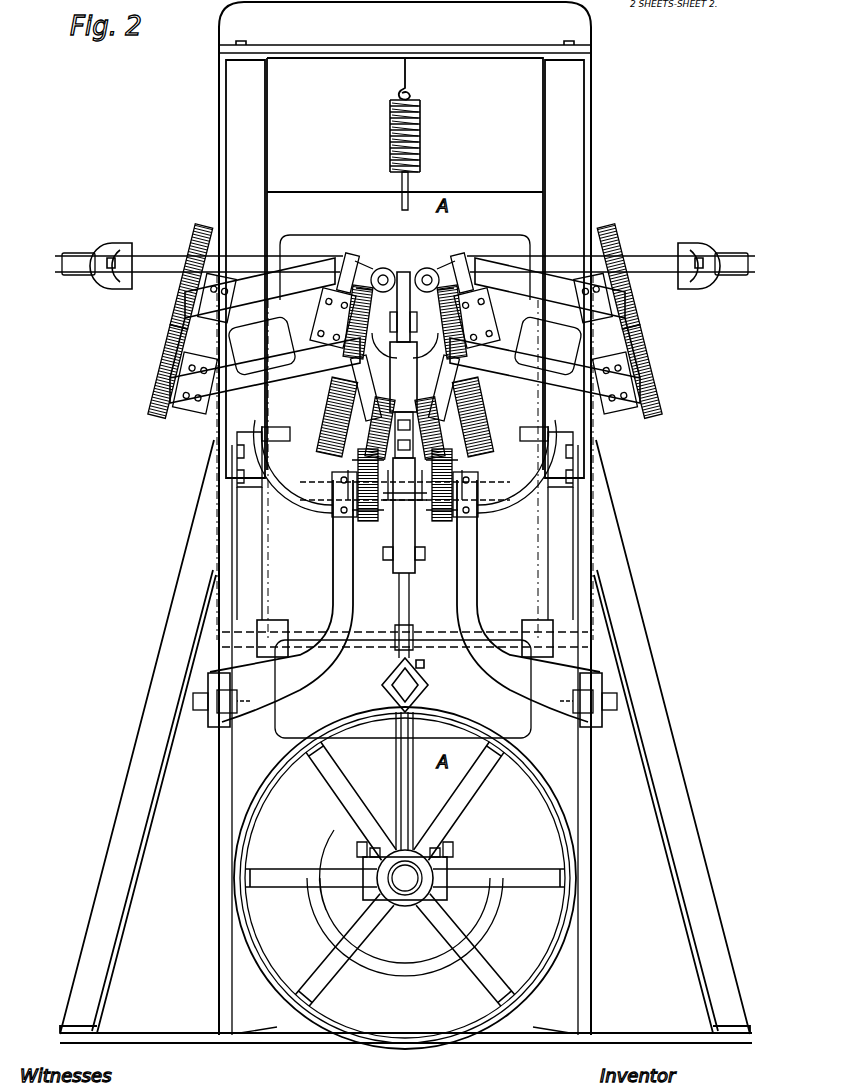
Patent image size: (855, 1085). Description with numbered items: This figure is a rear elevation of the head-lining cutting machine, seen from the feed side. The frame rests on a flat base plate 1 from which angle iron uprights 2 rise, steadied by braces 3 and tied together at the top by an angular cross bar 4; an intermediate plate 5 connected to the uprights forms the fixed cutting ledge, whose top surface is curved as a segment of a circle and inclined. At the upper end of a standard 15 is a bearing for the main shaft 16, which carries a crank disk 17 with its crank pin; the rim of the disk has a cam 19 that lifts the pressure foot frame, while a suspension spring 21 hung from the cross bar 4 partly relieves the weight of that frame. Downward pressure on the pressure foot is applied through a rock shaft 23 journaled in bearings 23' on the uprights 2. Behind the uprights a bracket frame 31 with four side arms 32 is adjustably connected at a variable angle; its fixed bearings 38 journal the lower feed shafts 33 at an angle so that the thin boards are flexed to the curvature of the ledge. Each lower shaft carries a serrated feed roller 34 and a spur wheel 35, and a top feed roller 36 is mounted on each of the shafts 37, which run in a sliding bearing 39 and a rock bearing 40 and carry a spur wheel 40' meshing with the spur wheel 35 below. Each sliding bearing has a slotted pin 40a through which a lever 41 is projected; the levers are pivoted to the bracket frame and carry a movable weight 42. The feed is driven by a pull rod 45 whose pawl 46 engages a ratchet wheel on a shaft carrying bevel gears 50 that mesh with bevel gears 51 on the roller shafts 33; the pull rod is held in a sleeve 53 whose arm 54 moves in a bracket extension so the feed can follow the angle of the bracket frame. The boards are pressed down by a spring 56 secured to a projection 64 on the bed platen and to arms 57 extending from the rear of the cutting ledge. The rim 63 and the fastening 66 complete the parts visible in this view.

The flat base plate 1 is at (226, 105).
The angle iron uprights 2 is at (582, 123).
The braces 3 is at (152, 650).
The angular cross bar 4 is at (405, 33).
The intermediate plate 5 is at (250, 487).
The standard 15 is at (322, 955).
The main shaft 16 is at (412, 872).
The crank disk 17 is at (470, 850).
The cam 19 is at (330, 833).
The suspension spring 21 is at (420, 135).
The rock shaft 23 is at (405, 653).
The bearings 23' is at (603, 598).
The bracket frame 31 is at (505, 522).
The side arms 32 is at (318, 662).
The lower feed shafts 33 is at (240, 400).
The serrated feed roller 34 is at (338, 385).
The spur wheel 35 is at (165, 355).
The top feed roller 36 is at (445, 265).
The shafts 37 is at (277, 300).
The fixed bearings 38 is at (405, 466).
The sliding bearing 39 is at (415, 325).
The rock bearing 40 is at (411, 260).
The spur wheel 40' is at (408, 299).
The slotted pin 40a is at (352, 256).
The lever 41 is at (70, 272).
The movable weight 42 is at (112, 282).
The pull rod 45 is at (412, 620).
The pawl 46 is at (393, 560).
The bevel gears 50 is at (370, 522).
The bevel gears 51 is at (405, 421).
The sleeve 53 is at (404, 388).
The arm 54 is at (425, 682).
The spring 56 is at (403, 400).
The arms 57 is at (332, 500).
The fly wheel rim 63 is at (392, 1052).
The projection 64 is at (394, 322).
The clamp bolt 66 is at (617, 700).